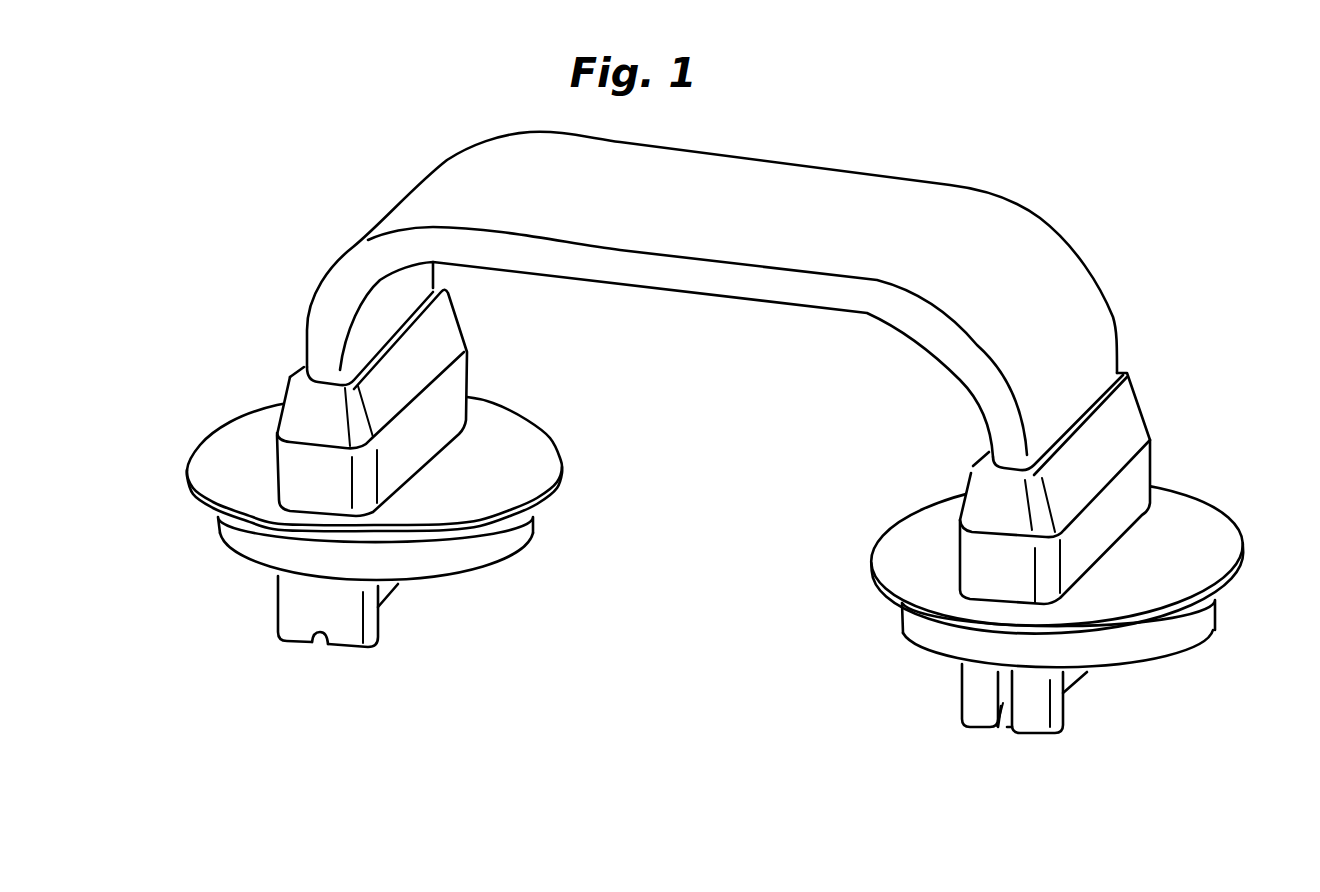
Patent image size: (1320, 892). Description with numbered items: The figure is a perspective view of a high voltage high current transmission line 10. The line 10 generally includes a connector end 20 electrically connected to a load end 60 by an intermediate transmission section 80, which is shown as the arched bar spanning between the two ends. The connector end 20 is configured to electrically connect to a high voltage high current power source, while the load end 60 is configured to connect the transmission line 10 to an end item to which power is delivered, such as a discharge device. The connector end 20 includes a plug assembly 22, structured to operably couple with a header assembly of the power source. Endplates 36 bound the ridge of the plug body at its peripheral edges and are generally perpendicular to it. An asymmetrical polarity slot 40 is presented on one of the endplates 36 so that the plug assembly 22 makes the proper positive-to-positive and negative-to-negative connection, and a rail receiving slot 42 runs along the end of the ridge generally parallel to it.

The high voltage high current transmission line 10 is at (358, 136).
The intermediate transmission section 80 is at (772, 135).
The plug assembly 22 is at (218, 402).
The connector end 20 is at (194, 663).
The load end 60 is at (1205, 712).
The endplates 36 is at (382, 620).
The asymmetrical polarity slot 40 is at (1005, 705).
The rail receiving slot 42 is at (321, 650).